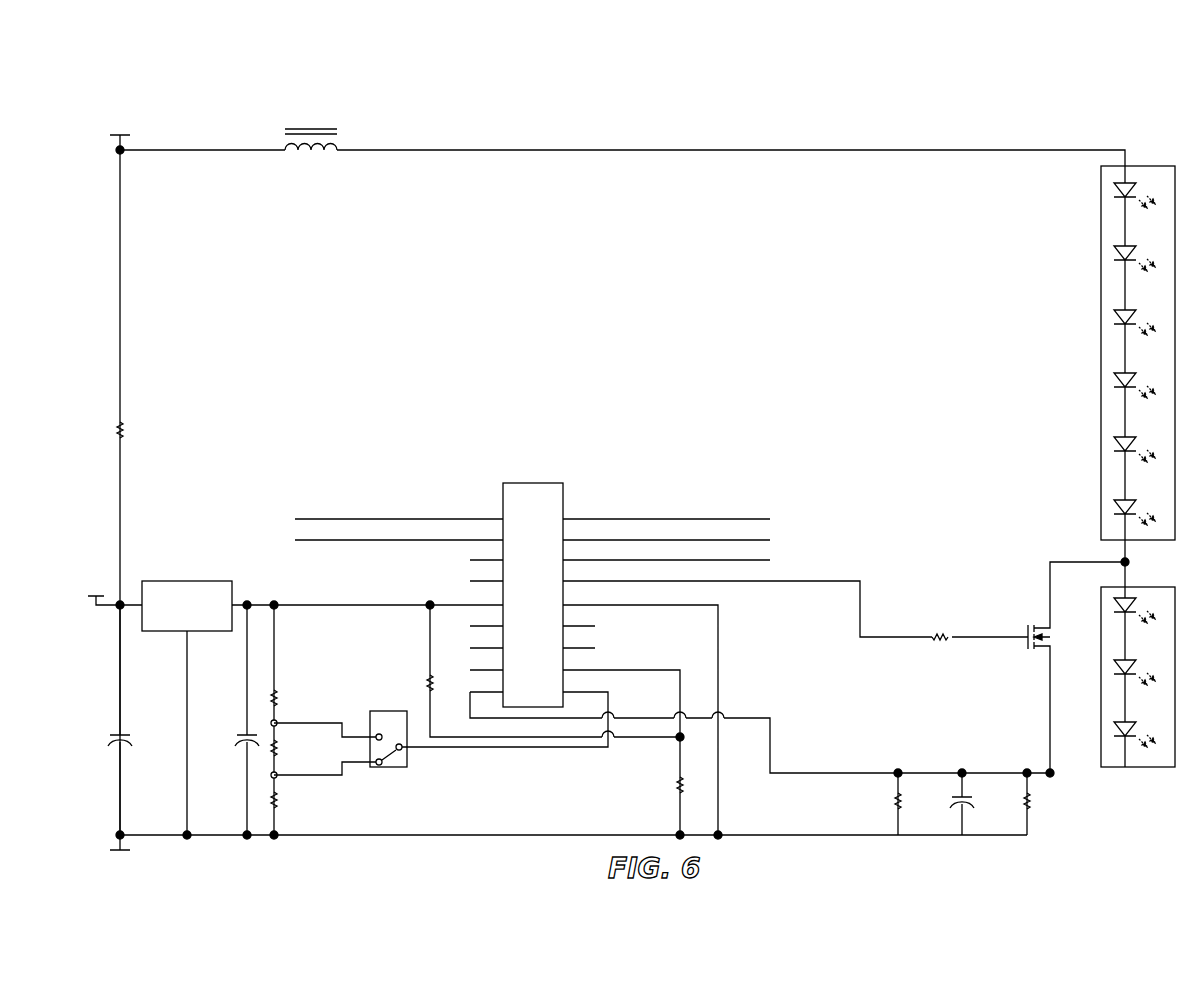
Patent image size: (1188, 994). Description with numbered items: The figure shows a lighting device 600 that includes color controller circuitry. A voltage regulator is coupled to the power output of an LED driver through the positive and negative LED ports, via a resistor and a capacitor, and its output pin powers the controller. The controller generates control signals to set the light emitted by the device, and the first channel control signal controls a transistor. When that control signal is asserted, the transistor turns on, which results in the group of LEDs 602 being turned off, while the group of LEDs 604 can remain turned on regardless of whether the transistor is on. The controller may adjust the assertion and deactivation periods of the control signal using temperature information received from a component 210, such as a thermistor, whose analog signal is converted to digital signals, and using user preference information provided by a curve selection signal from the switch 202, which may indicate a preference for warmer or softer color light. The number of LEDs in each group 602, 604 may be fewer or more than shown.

The lighting device 600 is at (993, 82).
The switch 202 is at (385, 708).
The component 210 is at (678, 787).
The group of LEDs 604 is at (1097, 386).
The group of LEDs 602 is at (1148, 769).